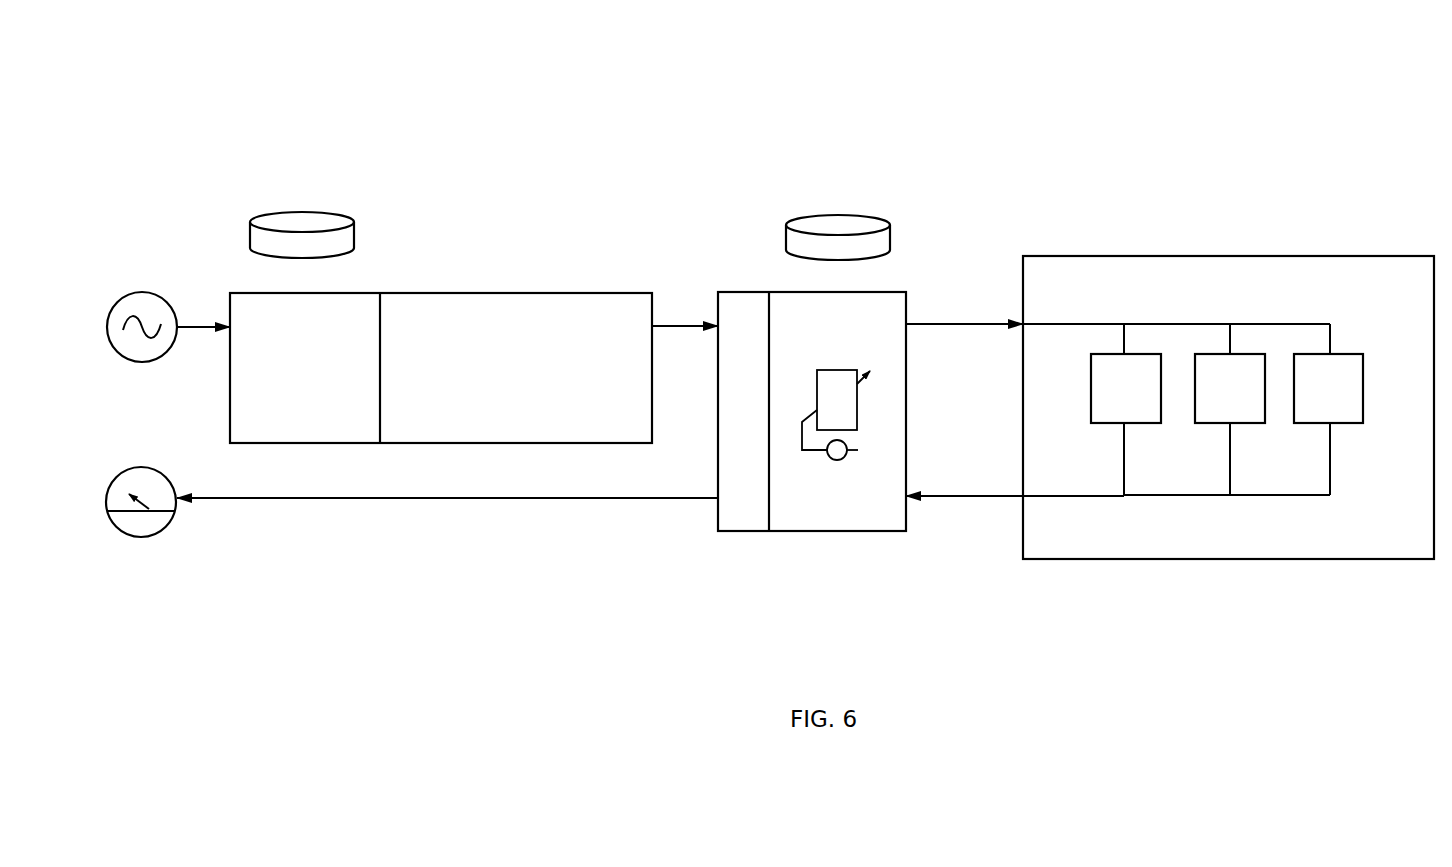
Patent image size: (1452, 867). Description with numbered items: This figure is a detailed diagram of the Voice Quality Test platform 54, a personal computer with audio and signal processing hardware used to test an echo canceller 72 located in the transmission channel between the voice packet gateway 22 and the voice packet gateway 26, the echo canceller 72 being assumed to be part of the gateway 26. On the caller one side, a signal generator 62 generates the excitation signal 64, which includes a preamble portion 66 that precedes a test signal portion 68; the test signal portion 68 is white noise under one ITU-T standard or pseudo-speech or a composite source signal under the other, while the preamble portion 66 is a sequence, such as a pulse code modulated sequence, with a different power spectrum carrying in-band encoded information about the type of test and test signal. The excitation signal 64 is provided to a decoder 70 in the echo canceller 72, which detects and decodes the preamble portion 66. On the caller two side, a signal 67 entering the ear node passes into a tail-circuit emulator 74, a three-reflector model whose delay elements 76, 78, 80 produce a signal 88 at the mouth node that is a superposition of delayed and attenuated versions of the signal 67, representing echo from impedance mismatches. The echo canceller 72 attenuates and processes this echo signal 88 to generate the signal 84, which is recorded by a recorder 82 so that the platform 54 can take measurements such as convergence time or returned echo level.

The Voice Quality Test (VQT) platform 54 is at (562, 92).
The voice packet gateway 22 is at (300, 212).
The voice packet gateway 26 is at (836, 215).
The signal generator 62 is at (138, 290).
The excitation signal 64 is at (441, 354).
The preamble portion 66 is at (299, 445).
The test signal portion 68 is at (500, 445).
The signal entering caller 2 ear node 67 is at (975, 327).
The decoder 70 is at (735, 533).
The echo canceller 72 is at (830, 534).
The tail-circuit emulator 74 is at (1228, 382).
The first delay element Z^-N1 76 is at (1100, 425).
The second delay element Z^-N2 78 is at (1210, 425).
The third delay element Z^-N3 80 is at (1310, 426).
The recorder 82 is at (142, 466).
The echo signal 84 is at (517, 500).
The echo signal 88 is at (968, 499).